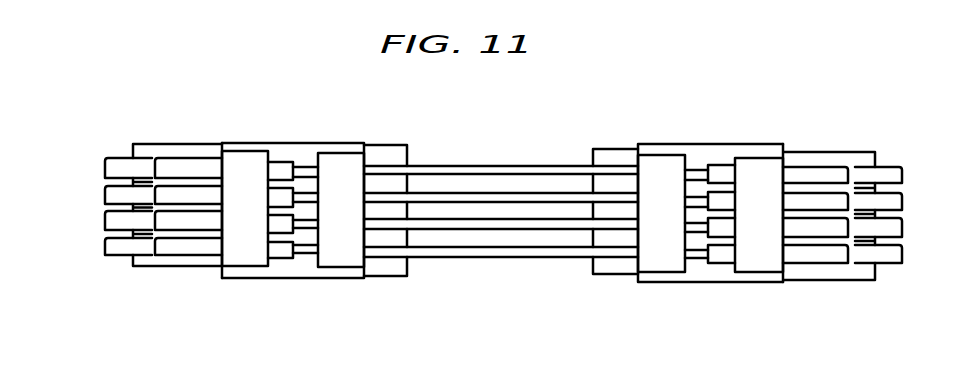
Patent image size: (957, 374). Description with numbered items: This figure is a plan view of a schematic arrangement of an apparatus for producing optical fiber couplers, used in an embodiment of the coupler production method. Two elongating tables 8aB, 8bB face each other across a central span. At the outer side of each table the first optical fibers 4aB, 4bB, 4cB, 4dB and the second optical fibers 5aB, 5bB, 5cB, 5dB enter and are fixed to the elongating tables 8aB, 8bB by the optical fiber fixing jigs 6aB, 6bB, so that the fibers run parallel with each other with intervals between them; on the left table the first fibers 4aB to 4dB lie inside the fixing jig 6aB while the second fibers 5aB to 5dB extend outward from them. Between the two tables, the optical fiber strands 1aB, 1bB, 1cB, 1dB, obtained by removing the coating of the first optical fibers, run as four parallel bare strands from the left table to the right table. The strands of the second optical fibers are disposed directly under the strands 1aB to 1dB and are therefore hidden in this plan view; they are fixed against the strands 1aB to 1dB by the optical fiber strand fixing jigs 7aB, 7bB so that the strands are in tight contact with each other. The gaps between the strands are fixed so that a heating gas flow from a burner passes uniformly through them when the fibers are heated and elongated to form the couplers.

The optical fiber 5dB is at (117, 165).
The optical fiber 5cB is at (110, 194).
The optical fiber 5bB is at (108, 222).
The optical fiber 5aB is at (110, 245).
The optical fiber 4dB is at (197, 167).
The optical fiber 4cB is at (178, 193).
The optical fiber 4bB is at (187, 222).
The optical fiber 4aB is at (175, 250).
The optical fiber fixing jig 6aB is at (247, 253).
The optical fiber strand fixing jig 7aB is at (342, 257).
The elongating table 8aB is at (297, 270).
The optical fiber strand 1dB is at (440, 170).
The optical fiber strand 1cB is at (390, 197).
The optical fiber strand 1bB is at (460, 228).
The optical fiber strand 1aB is at (390, 252).
The optical fiber strand fixing jig 7bB is at (667, 258).
The elongating table 8bB is at (707, 270).
The optical fiber fixing jig 6bB is at (765, 262).